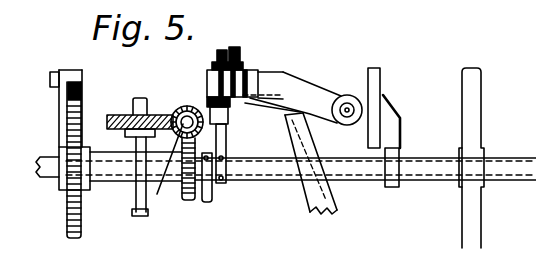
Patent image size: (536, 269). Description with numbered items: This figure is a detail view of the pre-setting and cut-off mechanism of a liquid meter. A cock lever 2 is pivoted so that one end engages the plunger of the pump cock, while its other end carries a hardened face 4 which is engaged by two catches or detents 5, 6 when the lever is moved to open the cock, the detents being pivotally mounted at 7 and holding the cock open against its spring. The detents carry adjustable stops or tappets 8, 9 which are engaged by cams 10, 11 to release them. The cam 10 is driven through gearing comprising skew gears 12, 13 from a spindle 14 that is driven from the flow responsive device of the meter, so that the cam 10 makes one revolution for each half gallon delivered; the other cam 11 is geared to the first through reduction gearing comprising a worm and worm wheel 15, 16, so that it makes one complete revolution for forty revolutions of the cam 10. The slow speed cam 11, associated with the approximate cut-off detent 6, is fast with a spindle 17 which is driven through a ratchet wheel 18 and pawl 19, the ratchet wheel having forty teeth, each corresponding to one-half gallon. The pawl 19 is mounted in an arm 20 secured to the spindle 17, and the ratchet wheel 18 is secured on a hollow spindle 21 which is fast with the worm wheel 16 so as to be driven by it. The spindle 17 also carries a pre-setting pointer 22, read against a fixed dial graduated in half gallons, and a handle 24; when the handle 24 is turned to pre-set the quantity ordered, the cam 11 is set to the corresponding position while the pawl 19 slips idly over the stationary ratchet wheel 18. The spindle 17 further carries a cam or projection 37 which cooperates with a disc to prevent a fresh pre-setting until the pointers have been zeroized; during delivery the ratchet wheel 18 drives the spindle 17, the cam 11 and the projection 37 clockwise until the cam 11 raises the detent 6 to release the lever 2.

The cock lever 2 is at (311, 163).
The hardened face 4 is at (284, 113).
The catch or detent 5 is at (259, 71).
The catch or detent 6 is at (297, 81).
The detent pivot 7 is at (347, 101).
The adjustable stop or tappet 8 is at (236, 50).
The adjustable stop or tappet 9 is at (219, 52).
The cam 10 is at (212, 106).
The cam 11 is at (226, 140).
The skew gear 12 is at (179, 111).
The skew gear 13 is at (121, 115).
The spindle 14 is at (134, 213).
The worm 15 is at (166, 170).
The worm wheel 16 is at (189, 201).
The spindle 17 is at (276, 179).
The ratchet wheel 18 is at (68, 217).
The pawl 19 is at (83, 87).
The arm 20 is at (59, 126).
The hollow spindle 21 is at (106, 182).
The pre-setting pointer 22 is at (401, 128).
The handle 24 is at (464, 96).
The cam or projection 37 is at (211, 202).